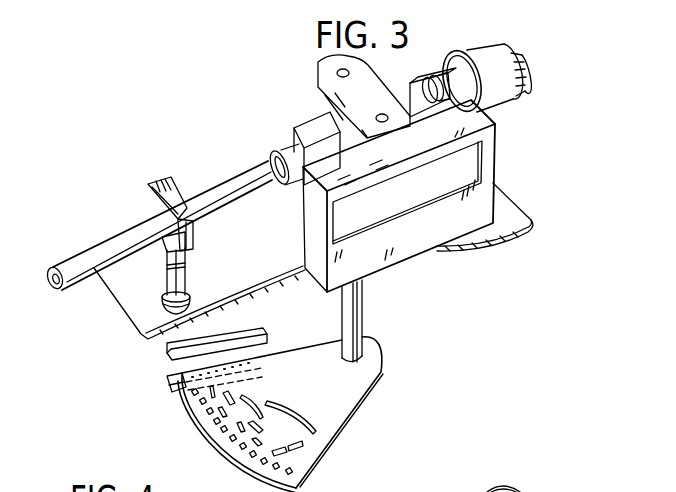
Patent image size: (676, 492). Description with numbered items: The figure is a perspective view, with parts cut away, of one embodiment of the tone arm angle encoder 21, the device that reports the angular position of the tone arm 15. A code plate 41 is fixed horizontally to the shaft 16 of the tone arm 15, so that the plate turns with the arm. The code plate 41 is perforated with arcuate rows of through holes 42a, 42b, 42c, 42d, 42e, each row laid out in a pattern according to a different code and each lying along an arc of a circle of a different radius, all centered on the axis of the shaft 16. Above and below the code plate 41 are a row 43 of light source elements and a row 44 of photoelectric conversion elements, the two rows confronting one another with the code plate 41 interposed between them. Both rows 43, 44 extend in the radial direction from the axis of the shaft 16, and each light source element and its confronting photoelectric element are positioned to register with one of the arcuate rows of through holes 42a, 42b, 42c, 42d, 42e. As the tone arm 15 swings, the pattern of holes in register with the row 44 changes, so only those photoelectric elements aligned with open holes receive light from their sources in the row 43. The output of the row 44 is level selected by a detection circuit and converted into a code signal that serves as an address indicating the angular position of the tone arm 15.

The tone arm angle encoder 21 is at (254, 112).
The tone arm 15 is at (197, 195).
The shaft 16 is at (363, 313).
The code plate 41 is at (367, 381).
The arcuate row of through holes 42a is at (243, 460).
The arcuate row of through holes 42b is at (317, 468).
The arcuate row of through holes 42c is at (297, 447).
The arcuate row of through holes 42d is at (243, 398).
The arcuate row of through holes 42e is at (298, 424).
The row of light source elements 43 is at (264, 332).
The row of photoelectric conversion elements 44 is at (166, 381).